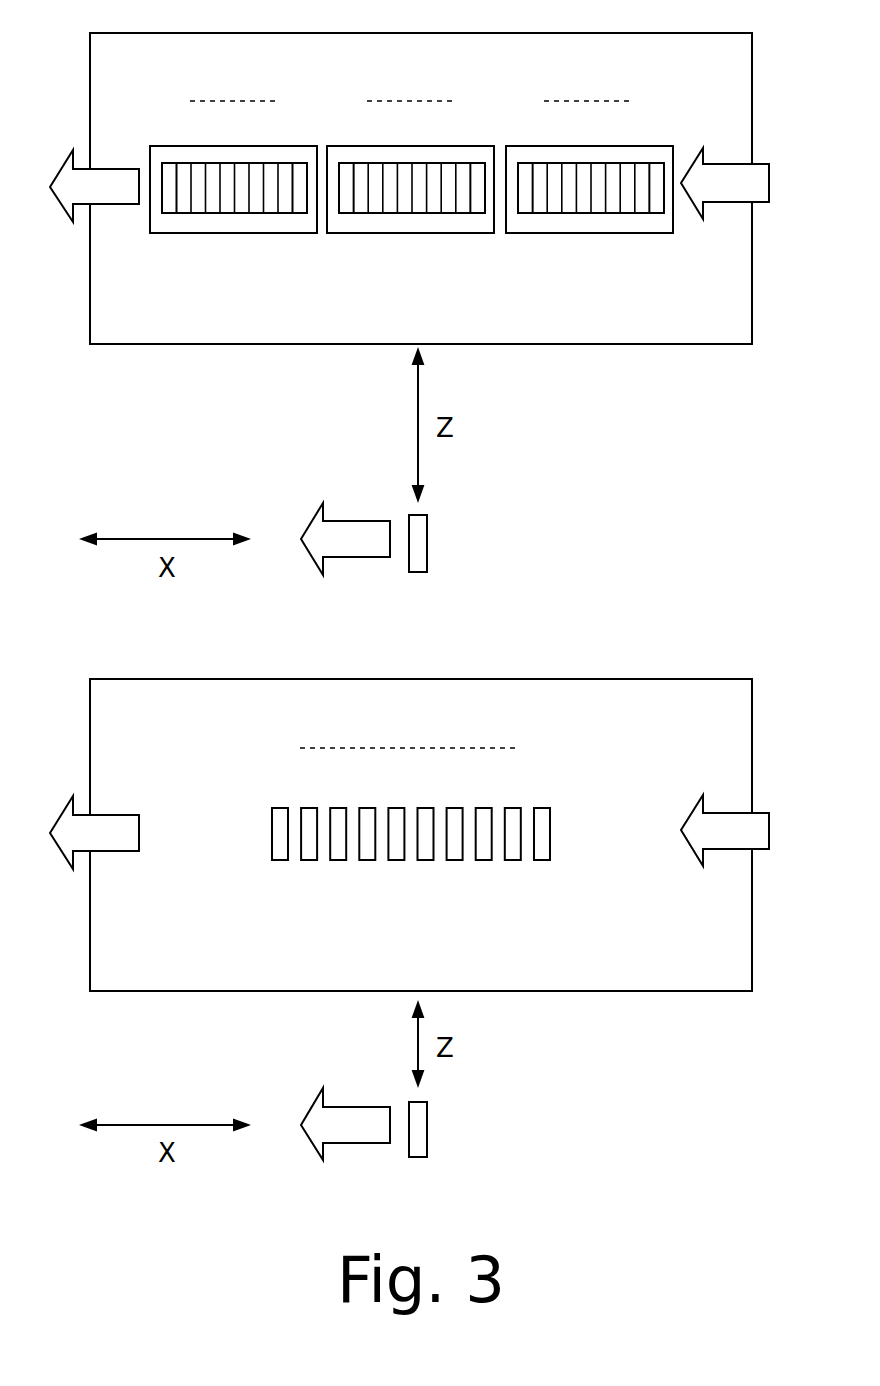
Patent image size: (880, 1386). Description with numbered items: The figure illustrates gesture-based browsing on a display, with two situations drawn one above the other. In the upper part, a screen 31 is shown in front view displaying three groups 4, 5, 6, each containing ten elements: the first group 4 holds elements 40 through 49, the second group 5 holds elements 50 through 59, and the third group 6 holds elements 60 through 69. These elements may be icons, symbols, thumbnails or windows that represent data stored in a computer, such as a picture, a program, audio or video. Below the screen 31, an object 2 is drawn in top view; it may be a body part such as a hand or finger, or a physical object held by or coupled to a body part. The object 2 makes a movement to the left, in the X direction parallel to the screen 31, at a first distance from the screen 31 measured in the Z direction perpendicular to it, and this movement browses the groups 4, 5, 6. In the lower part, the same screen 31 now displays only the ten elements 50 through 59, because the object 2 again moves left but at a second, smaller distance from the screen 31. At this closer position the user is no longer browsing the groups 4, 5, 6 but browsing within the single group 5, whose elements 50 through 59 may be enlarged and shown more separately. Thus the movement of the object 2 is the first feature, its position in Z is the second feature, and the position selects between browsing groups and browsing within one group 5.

The object 2 is at (427, 539).
The group 4 is at (232, 233).
The group 5 is at (411, 233).
The group 6 is at (588, 233).
The screen 31 is at (714, 344).
The element 40 is at (167, 170).
The element 49 is at (298, 170).
The element 50 is at (346, 170).
The element 59 is at (477, 170).
The element 60 is at (523, 170).
The element 69 is at (655, 170).